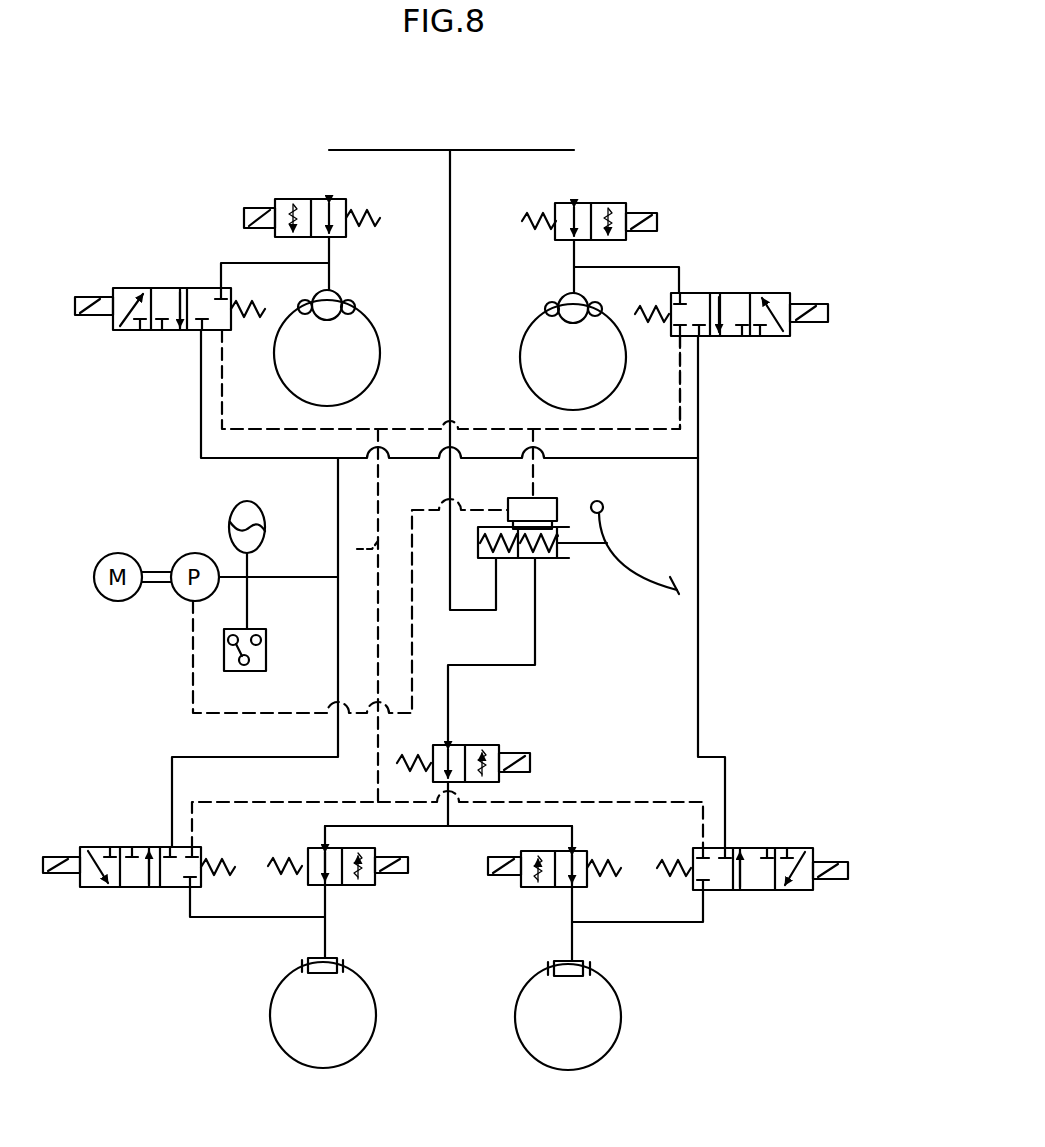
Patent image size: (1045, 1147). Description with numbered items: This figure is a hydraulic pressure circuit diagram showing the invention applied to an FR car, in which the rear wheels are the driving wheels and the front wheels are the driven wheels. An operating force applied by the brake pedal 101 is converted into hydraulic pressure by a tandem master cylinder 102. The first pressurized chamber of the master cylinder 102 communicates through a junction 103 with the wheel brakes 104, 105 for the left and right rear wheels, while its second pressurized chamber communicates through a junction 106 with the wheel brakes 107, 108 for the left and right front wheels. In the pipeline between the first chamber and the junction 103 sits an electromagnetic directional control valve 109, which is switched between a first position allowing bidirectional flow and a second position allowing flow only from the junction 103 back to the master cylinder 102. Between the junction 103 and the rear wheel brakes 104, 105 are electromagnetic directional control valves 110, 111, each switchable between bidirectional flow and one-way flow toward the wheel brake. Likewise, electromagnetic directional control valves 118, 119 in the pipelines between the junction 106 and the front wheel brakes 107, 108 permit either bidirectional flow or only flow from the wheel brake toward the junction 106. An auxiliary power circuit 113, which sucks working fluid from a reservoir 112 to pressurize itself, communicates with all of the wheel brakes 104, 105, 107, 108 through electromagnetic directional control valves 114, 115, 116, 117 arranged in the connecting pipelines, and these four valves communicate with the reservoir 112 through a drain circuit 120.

The brake pedal 101 is at (645, 578).
The master cylinder 102 is at (552, 560).
The junction 103 is at (448, 830).
The wheel brake 104 is at (337, 960).
The wheel brake 105 is at (580, 963).
The junction 106 is at (453, 150).
The wheel brake 107 is at (340, 294).
The wheel brake 108 is at (560, 295).
The electromagnetic directional control valve 109 is at (486, 745).
The electromagnetic directional control valve 110 is at (347, 885).
The electromagnetic directional control valve 111 is at (543, 887).
The reservoir 112 is at (557, 498).
The auxiliary power circuit 113 is at (338, 485).
The electromagnetic directional control valve 114 is at (140, 847).
The electromagnetic directional control valve 115 is at (780, 848).
The electromagnetic directional control valve 116 is at (170, 288).
The electromagnetic directional control valve 117 is at (745, 293).
The electromagnetic directional control valve 118 is at (305, 199).
The electromagnetic directional control valve 119 is at (587, 203).
The drain circuit 120 is at (447, 638).